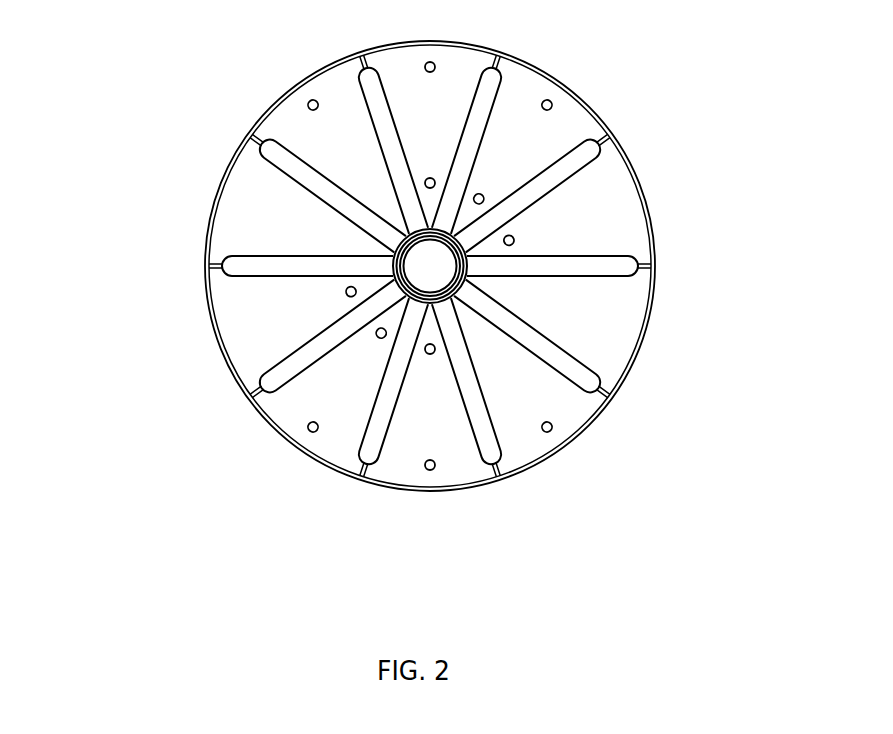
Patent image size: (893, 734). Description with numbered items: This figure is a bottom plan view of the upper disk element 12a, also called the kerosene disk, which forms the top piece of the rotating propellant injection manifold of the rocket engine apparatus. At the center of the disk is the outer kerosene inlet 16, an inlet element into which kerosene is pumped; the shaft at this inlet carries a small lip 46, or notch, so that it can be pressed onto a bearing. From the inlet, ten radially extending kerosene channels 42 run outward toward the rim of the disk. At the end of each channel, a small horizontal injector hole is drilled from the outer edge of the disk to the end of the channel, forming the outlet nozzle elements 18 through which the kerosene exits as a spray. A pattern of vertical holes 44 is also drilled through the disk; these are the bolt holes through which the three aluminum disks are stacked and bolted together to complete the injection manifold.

The upper disk element 12a is at (271, 500).
The kerosene inlet 16 is at (468, 278).
The outlet nozzle elements 18 is at (205, 284).
The radially extending kerosene channels 42 is at (291, 352).
The vertical holes 44 is at (546, 101).
The lip 46 is at (447, 297).